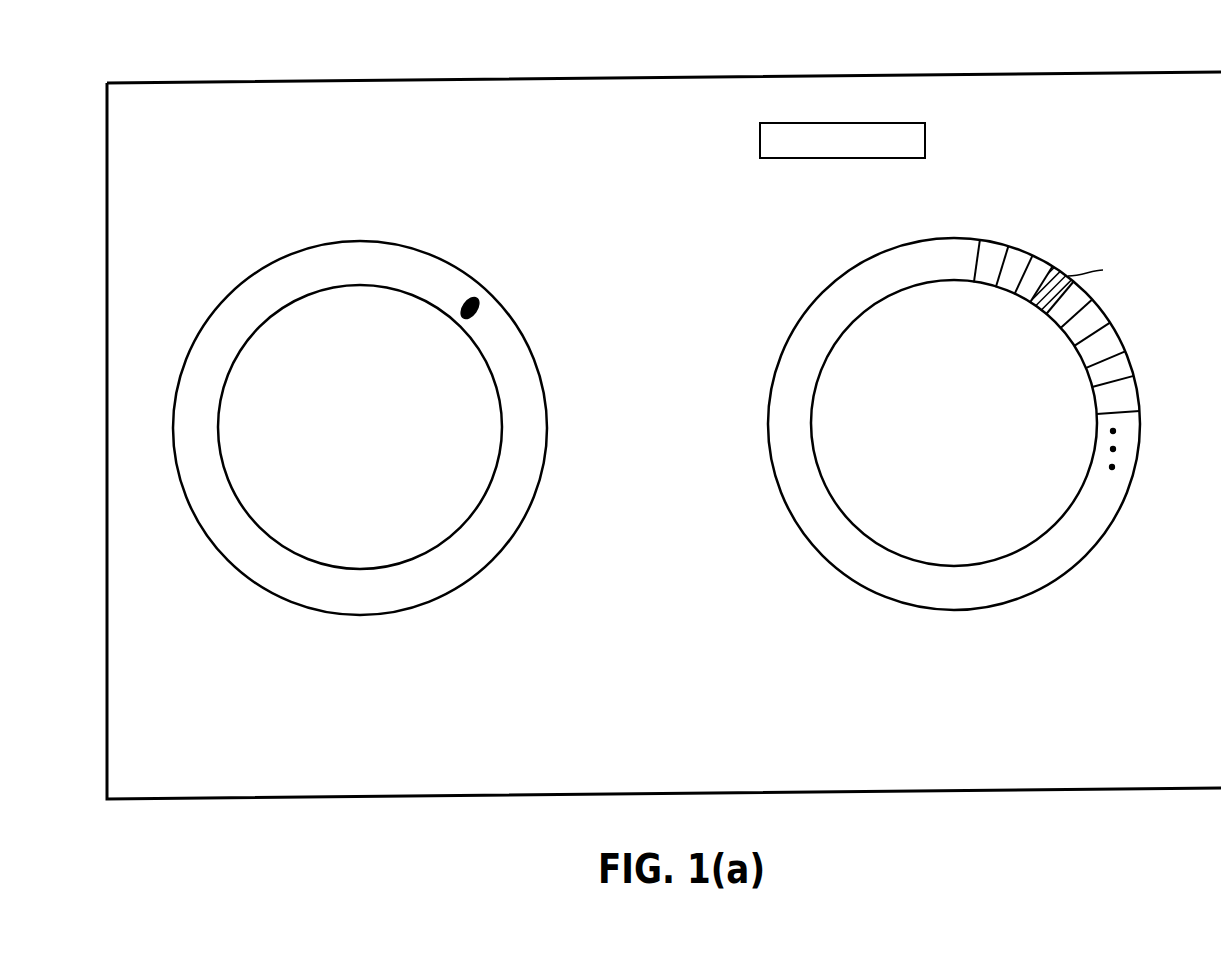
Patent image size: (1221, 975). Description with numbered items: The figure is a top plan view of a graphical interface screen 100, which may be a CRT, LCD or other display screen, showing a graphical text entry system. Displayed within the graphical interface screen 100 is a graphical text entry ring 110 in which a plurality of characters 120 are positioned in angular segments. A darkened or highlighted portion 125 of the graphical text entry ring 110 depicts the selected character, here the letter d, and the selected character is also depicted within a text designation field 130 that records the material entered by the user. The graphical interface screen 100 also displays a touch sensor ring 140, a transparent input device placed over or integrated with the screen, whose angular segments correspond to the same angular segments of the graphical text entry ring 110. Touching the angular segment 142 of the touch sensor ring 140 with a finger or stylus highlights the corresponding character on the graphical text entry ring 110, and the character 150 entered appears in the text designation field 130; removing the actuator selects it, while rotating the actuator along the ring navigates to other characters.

The graphical interface screen 100 is at (678, 79).
The graphical text entry ring 110 is at (767, 428).
The plurality of characters 120 is at (1023, 245).
The darkened or highlighted portion 125 is at (1047, 292).
The text designation field 130 is at (927, 137).
The touch sensor ring 140 is at (359, 240).
The highlighted portion or angular segment 142 is at (480, 297).
The entered character 150 is at (785, 147).